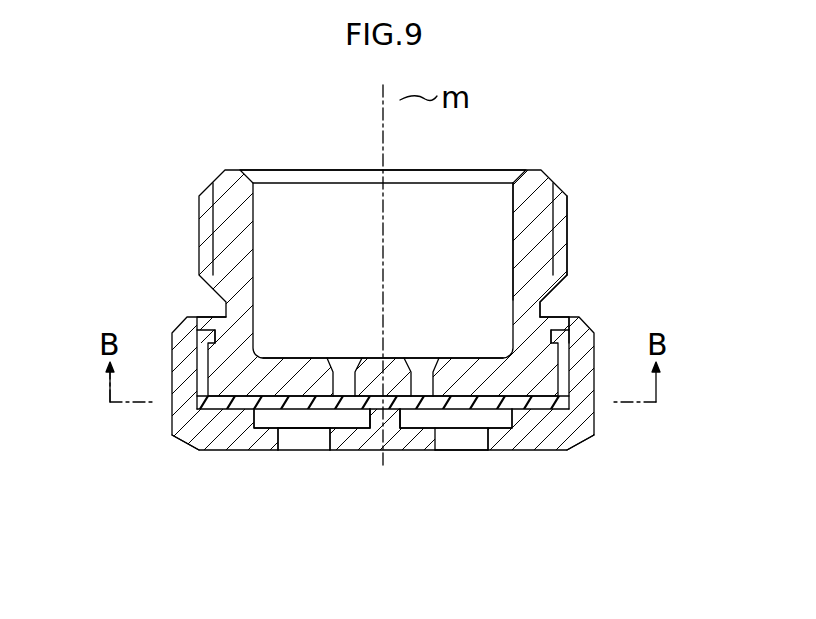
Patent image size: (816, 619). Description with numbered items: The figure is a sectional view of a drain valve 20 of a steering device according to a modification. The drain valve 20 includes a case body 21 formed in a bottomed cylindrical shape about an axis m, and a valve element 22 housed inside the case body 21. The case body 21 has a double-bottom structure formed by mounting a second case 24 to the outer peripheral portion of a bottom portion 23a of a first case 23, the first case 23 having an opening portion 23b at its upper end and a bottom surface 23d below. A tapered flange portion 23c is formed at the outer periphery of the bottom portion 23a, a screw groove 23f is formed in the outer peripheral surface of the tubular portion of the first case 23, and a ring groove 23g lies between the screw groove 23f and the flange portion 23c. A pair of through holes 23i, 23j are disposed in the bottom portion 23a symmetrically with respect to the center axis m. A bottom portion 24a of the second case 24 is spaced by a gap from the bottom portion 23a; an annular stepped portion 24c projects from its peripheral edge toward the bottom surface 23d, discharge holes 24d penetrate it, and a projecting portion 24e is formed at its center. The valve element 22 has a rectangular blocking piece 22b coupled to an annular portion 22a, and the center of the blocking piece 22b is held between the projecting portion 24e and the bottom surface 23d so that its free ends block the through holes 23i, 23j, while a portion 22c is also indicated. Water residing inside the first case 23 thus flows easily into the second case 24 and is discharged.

The drain valve 20 is at (575, 168).
The case body 21 is at (278, 169).
The valve element 22 is at (312, 425).
The annular portion 22a is at (250, 425).
The blocking piece 22b is at (333, 410).
The substrate outer edge 22c is at (192, 444).
The first case 23 is at (209, 180).
The bottom portion 23a is at (465, 353).
The opening portion 23b is at (518, 173).
The flange portion 23c is at (577, 338).
The bottom surface 23d is at (478, 410).
The screw groove 23f is at (565, 225).
The ring groove 23g is at (548, 303).
The through hole 23i is at (350, 355).
The through hole 23j is at (420, 355).
The second case 24 is at (183, 327).
The bottom portion 24a is at (403, 425).
The stepped portion 24c is at (511, 436).
The discharge holes 24d is at (458, 440).
The projecting portion 24e is at (356, 445).